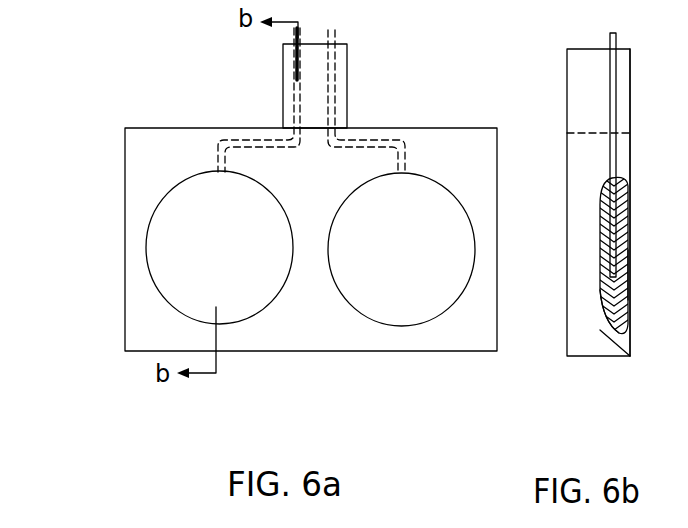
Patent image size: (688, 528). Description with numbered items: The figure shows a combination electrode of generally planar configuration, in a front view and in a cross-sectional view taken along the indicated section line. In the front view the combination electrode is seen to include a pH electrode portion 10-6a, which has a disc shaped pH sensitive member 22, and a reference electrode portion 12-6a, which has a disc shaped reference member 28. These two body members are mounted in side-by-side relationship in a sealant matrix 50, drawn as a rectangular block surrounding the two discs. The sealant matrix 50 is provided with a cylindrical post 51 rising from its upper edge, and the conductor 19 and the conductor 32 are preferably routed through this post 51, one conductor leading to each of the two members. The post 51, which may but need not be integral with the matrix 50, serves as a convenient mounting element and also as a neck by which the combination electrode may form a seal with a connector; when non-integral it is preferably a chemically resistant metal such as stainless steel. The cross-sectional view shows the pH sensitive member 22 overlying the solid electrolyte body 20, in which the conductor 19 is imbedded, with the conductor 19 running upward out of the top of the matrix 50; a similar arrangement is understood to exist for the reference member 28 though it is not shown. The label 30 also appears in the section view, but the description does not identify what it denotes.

In FIG. 6a, the sealant matrix 50 is at (460, 352).
In FIG. 6b, the sealant matrix 50 is at (578, 155).
In FIG. 6a, the cylindrical post 51 is at (347, 57).
In FIG. 6b, the cylindrical post 51 is at (630, 83).
In FIG. 6a, the conductor 19 is at (293, 100).
In FIG. 6b, the conductor 19 is at (610, 40).
In FIG. 6a, the conductor 32 is at (336, 97).
In FIG. 6a, the pH sensitive member 22 is at (146, 232).
In FIG. 6b, the pH sensitive member 22 is at (628, 237).
In FIG. 6a, the reference member 28 is at (362, 313).
In FIG. 6b, the reference member 28 is at (686, 243).
In FIG. 6b, the solid electrolyte body 20 is at (600, 303).
In FIG. 6b, the outlet 30 is at (686, 353).
In FIG. 6a, the pH electrode portion 10-6a is at (108, 291).
In FIG. 6a, the reference electrode portion 12-6a is at (425, 372).